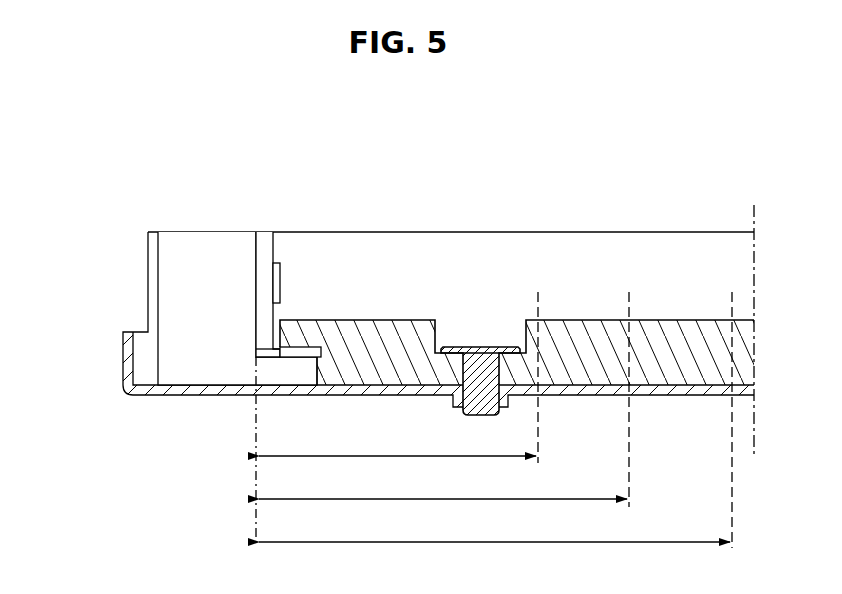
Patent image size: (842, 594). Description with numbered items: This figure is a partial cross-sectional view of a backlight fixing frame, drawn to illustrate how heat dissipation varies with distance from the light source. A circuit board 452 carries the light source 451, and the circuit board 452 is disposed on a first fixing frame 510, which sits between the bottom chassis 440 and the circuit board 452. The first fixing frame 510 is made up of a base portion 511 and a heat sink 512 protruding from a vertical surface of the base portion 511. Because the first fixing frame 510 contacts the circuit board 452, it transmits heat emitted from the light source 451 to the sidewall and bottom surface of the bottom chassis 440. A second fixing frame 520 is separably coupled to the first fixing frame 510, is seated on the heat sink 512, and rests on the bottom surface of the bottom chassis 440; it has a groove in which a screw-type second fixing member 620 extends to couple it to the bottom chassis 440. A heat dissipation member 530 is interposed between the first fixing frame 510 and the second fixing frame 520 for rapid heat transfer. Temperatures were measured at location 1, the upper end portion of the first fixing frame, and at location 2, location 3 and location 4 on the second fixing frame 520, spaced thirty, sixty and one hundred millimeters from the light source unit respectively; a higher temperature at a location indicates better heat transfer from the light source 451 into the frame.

The location 1 is at (214, 222).
The bottom chassis 440 is at (128, 355).
The light source 451 is at (277, 274).
The circuit board 452 is at (263, 246).
The first fixing frame 510 is at (182, 246).
The base portion 511 is at (183, 372).
The heat sink 512 is at (286, 377).
The second fixing frame 520 is at (404, 333).
The heat dissipation member 530 is at (308, 350).
The second fixing member 620 is at (480, 348).
The location 2 is at (398, 377).
The location 3 is at (444, 399).
The location 4 is at (495, 420).